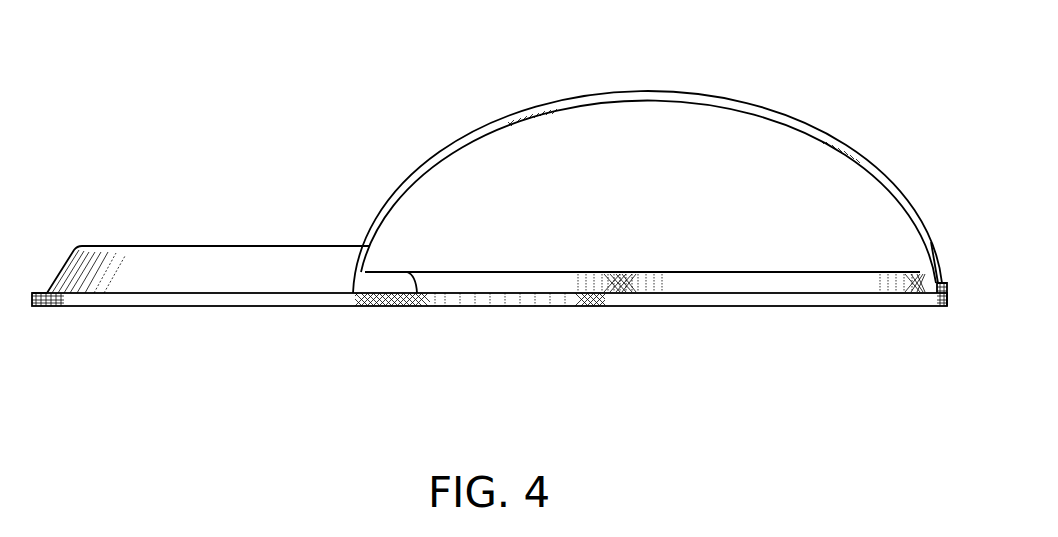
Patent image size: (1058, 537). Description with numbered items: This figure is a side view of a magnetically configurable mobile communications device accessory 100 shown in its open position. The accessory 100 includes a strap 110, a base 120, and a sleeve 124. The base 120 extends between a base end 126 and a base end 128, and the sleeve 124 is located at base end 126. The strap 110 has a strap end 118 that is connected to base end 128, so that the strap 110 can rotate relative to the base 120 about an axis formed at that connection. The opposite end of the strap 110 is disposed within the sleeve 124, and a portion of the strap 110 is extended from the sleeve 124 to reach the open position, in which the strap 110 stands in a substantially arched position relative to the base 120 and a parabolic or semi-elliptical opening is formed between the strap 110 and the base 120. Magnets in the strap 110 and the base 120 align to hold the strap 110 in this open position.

The magnetically configurable mobile communications device accessory 100 is at (652, 307).
The strap 110 is at (437, 152).
The strap end 118 is at (923, 213).
The base 120 is at (338, 307).
The sleeve 124 is at (195, 247).
The base end 126 is at (72, 307).
The base end 128 is at (913, 307).